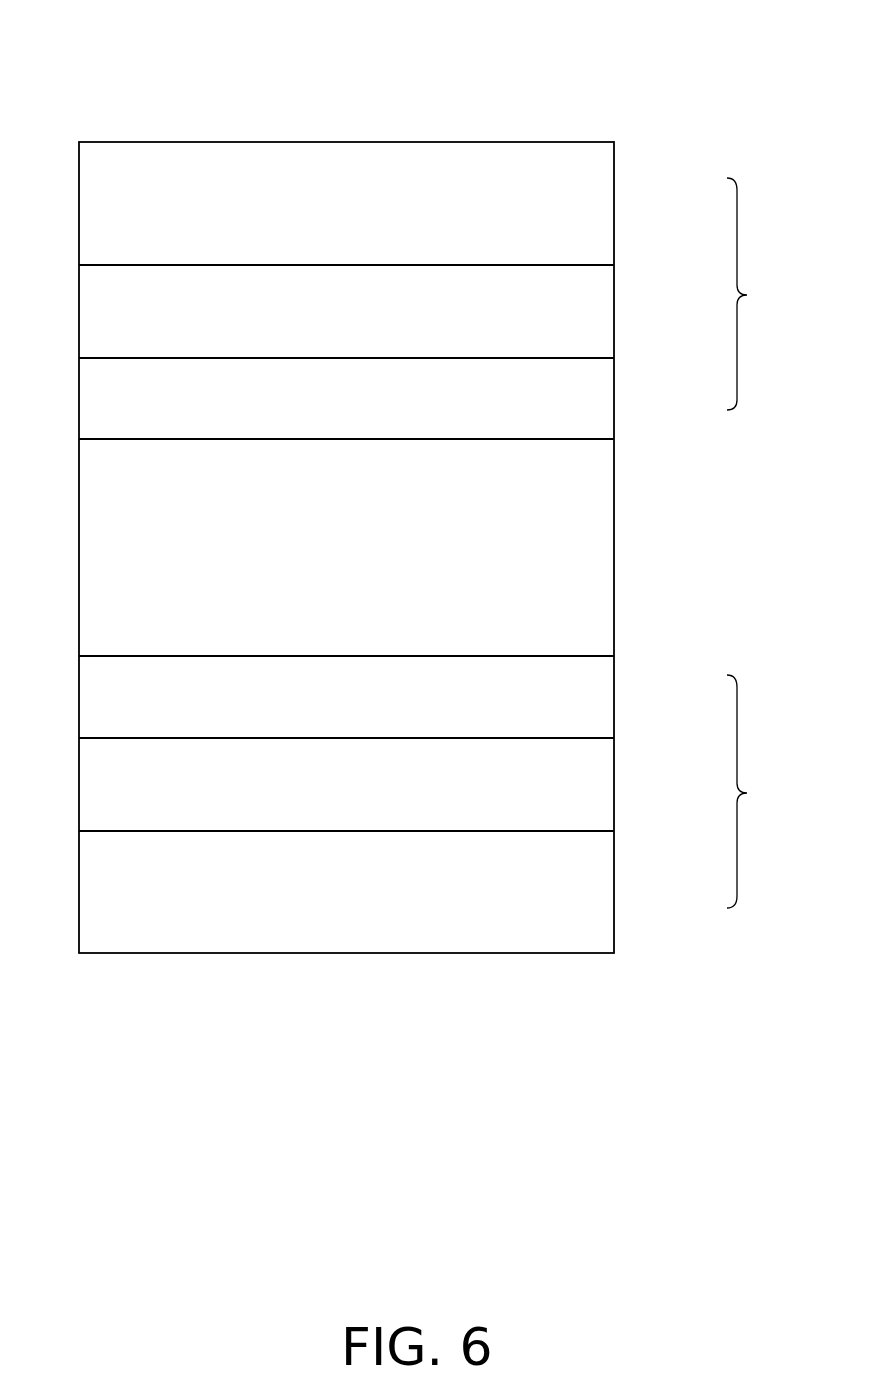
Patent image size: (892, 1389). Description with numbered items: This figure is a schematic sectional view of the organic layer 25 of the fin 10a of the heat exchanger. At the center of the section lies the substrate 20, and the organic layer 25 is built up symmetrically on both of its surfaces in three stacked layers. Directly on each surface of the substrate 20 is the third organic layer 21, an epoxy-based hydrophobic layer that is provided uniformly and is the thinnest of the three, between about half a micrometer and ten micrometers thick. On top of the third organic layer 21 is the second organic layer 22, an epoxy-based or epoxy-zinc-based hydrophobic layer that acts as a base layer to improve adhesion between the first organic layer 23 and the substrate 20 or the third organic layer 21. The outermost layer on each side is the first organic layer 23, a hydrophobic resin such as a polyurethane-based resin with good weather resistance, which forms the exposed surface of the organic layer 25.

The fin 10a is at (584, 106).
The substrate 20 is at (602, 554).
The third organic layer 21 is at (602, 405).
The second organic layer 22 is at (602, 317).
The first organic layer 23 is at (602, 207).
The organic layer 25 is at (760, 543).